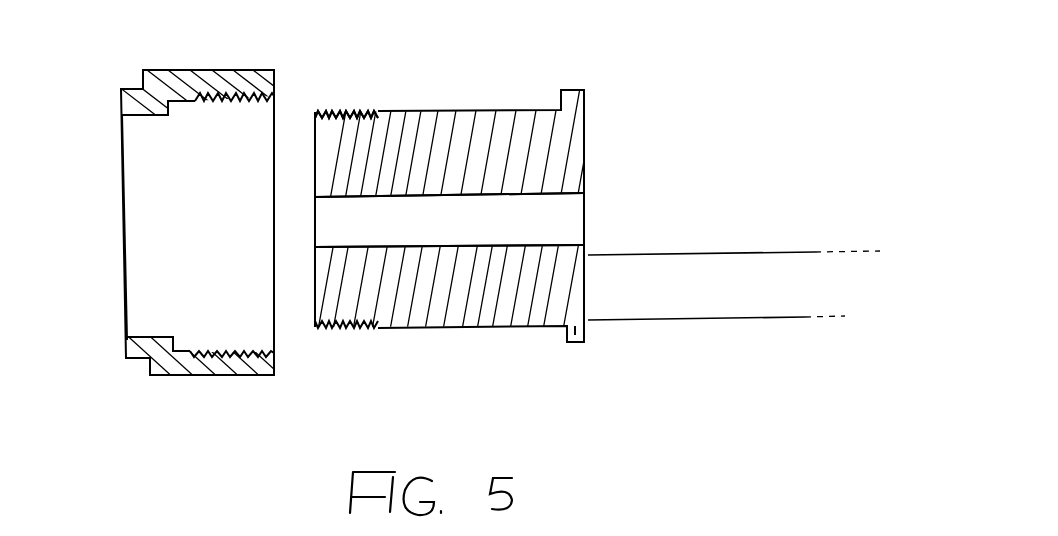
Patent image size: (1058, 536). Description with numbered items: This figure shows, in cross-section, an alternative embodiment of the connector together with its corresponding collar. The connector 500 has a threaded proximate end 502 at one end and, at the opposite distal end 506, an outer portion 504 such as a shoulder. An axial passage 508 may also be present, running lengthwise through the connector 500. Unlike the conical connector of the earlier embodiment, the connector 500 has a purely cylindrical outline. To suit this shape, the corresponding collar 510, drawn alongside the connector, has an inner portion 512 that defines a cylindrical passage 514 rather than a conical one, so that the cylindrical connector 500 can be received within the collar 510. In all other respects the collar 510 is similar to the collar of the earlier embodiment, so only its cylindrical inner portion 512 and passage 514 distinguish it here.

The connector 500 is at (445, 120).
The threaded proximate end 502 is at (316, 150).
The outer portion 504 is at (575, 342).
The distal end 506 is at (588, 298).
The axial passage 508 is at (468, 237).
The collar 510 is at (195, 376).
The inner portion 512 is at (128, 360).
The cylindrical passage 514 is at (167, 297).